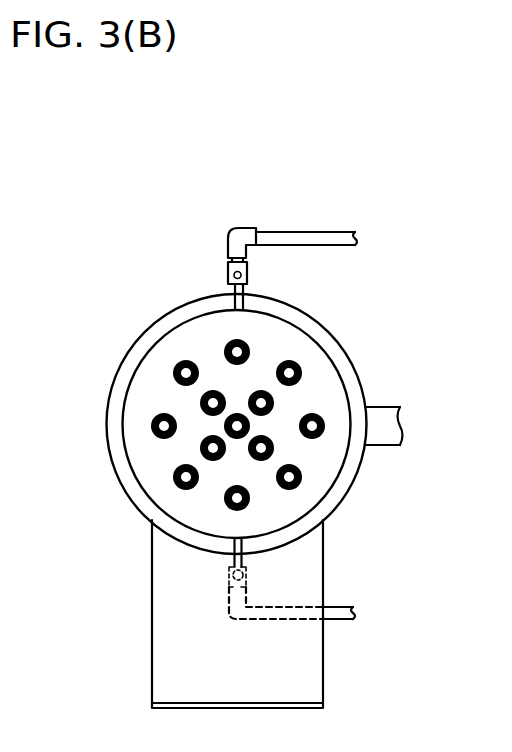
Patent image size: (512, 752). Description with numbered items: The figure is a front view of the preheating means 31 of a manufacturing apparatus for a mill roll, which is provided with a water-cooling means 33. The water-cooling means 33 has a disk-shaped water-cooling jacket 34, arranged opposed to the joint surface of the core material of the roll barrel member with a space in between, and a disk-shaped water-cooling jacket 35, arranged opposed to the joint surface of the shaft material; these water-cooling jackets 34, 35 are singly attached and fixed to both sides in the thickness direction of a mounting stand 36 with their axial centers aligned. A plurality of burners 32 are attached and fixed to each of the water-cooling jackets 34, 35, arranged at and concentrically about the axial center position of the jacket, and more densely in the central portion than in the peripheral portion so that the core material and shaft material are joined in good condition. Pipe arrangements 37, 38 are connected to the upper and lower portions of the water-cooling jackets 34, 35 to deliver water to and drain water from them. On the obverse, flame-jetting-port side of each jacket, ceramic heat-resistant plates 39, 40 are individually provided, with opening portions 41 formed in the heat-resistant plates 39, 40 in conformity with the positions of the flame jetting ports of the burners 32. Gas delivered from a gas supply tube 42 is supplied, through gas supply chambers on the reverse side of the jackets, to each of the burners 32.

The preheating means 31 is at (273, 344).
The burners 32 is at (227, 346).
The water-cooling means 33 is at (331, 217).
The water-cooling jacket 34 is at (284, 416).
The water-cooling jacket 35 is at (334, 319).
The mounting stand 36 is at (147, 629).
The pipe arrangement 37 is at (259, 222).
The pipe arrangement 38 is at (346, 624).
The heat-resistant plate 39 is at (304, 406).
The heat-resistant plate 40 is at (284, 406).
The opening portions 41 is at (200, 402).
The gas supply tube 42 is at (392, 433).